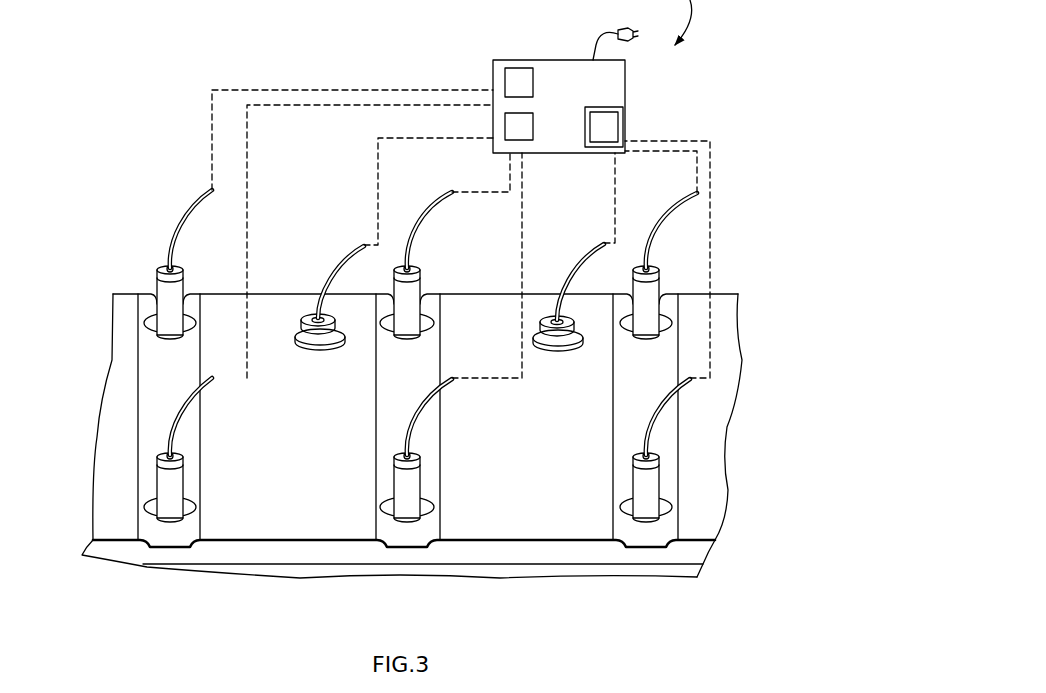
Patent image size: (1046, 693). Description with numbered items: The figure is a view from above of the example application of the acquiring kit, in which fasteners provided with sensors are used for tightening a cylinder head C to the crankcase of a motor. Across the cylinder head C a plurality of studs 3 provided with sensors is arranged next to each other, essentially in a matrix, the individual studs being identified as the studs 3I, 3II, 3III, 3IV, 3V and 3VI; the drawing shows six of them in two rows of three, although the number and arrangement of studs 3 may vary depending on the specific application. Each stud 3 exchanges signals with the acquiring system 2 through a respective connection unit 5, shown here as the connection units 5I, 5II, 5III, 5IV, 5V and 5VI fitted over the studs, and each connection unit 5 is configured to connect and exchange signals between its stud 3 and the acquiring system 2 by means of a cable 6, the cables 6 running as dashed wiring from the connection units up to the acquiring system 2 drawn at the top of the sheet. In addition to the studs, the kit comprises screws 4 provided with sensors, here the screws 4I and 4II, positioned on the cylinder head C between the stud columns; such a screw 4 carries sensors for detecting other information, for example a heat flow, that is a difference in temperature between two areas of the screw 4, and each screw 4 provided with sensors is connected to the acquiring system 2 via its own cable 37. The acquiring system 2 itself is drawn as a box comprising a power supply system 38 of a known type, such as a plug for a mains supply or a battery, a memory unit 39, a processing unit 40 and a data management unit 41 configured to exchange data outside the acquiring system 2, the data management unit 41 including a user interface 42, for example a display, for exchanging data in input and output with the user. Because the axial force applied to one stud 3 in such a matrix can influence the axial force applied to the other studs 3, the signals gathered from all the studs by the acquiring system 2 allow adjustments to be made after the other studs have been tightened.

The acquiring system 2 is at (585, 77).
The power supply system 38 is at (629, 41).
The memory unit 39 is at (533, 85).
The processing unit 40 is at (533, 125).
The data management unit 41 is at (605, 107).
The user interface 42 is at (608, 126).
The stud 3 is at (382, 330).
The first stud 3I is at (152, 502).
The second stud 3II is at (153, 318).
The third stud 3III is at (388, 502).
The fourth stud 3IV is at (389, 312).
The fifth stud 3V is at (626, 502).
The sixth stud 3VI is at (628, 318).
The connection unit 5 is at (465, 376).
The first connection unit 5I is at (187, 486).
The second connection unit 5II is at (178, 296).
The third connection unit 5III is at (416, 483).
The fourth connection unit 5IV is at (452, 265).
The fifth connection unit 5V is at (658, 484).
The sixth connection unit 5VI is at (658, 294).
The screw provided with sensors 4 is at (422, 356).
The first screw provided with sensors 4I is at (295, 333).
The second screw provided with sensors 4II is at (578, 344).
The cable 6 is at (178, 217).
The cable 37 is at (331, 268).
The cylinder head C is at (717, 403).